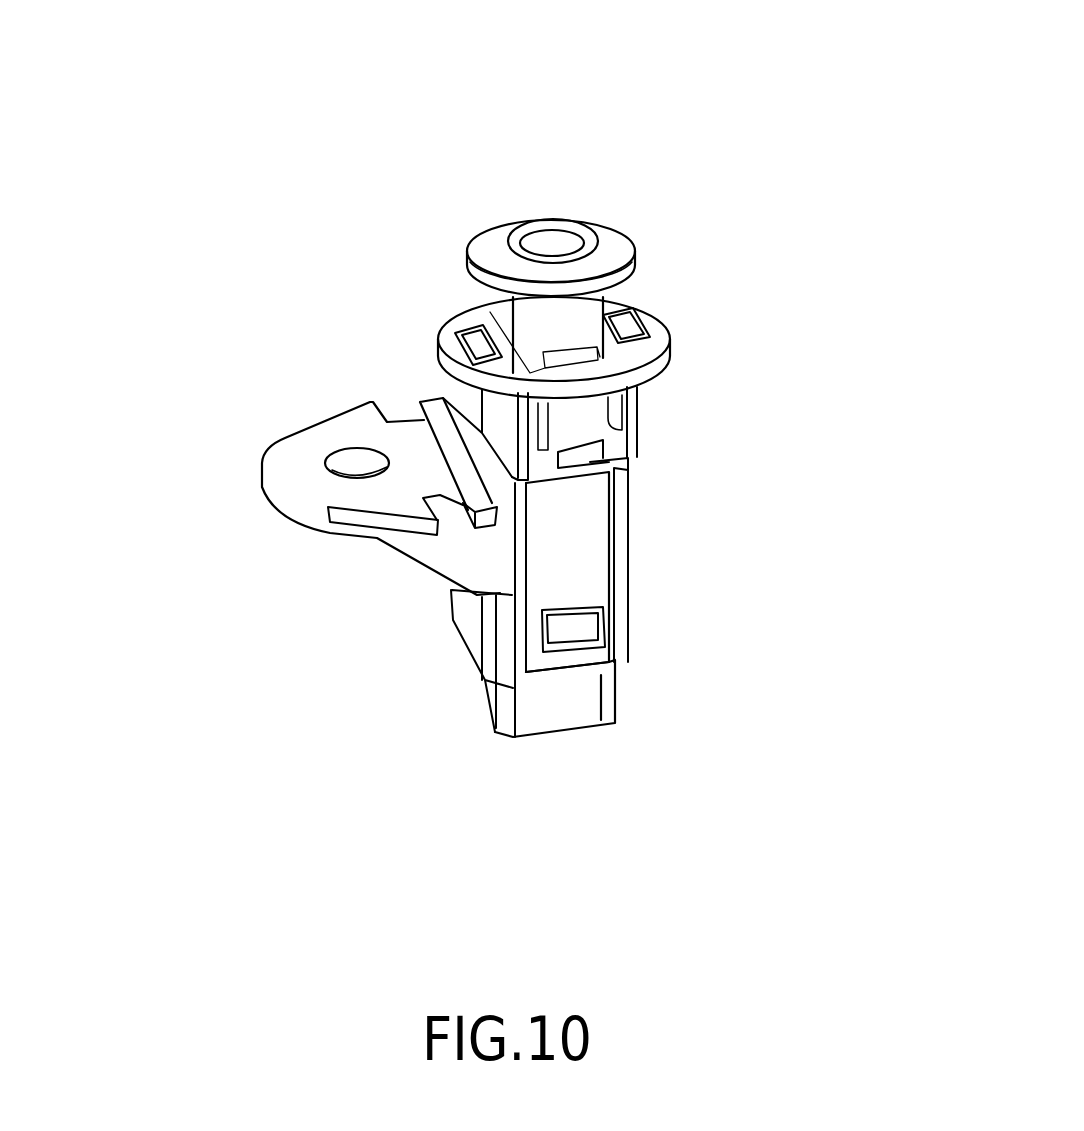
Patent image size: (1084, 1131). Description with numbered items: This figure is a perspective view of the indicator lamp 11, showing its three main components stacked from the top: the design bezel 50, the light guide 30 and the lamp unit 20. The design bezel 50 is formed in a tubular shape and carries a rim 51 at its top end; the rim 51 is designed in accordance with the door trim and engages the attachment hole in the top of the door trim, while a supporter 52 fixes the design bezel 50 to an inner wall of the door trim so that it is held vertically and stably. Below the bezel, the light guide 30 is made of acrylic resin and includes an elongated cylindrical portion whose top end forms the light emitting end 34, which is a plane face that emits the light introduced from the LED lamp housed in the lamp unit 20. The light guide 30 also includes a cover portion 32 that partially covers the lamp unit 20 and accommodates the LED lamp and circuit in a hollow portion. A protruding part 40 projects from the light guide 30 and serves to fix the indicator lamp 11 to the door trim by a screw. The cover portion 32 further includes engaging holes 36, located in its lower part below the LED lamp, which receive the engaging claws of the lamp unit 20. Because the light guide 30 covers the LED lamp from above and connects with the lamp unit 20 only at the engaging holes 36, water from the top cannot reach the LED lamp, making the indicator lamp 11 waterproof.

The indicator lamp 11 is at (395, 182).
The lamp unit 20 is at (622, 697).
The light guide 30 is at (488, 553).
The cover portion 32 is at (573, 530).
The light emitting end 34 is at (545, 243).
The engaging holes 36 is at (540, 640).
The protruding part 40 is at (303, 466).
The design bezel 50 is at (527, 313).
The rim 51 is at (612, 255).
The supporter 52 is at (633, 370).